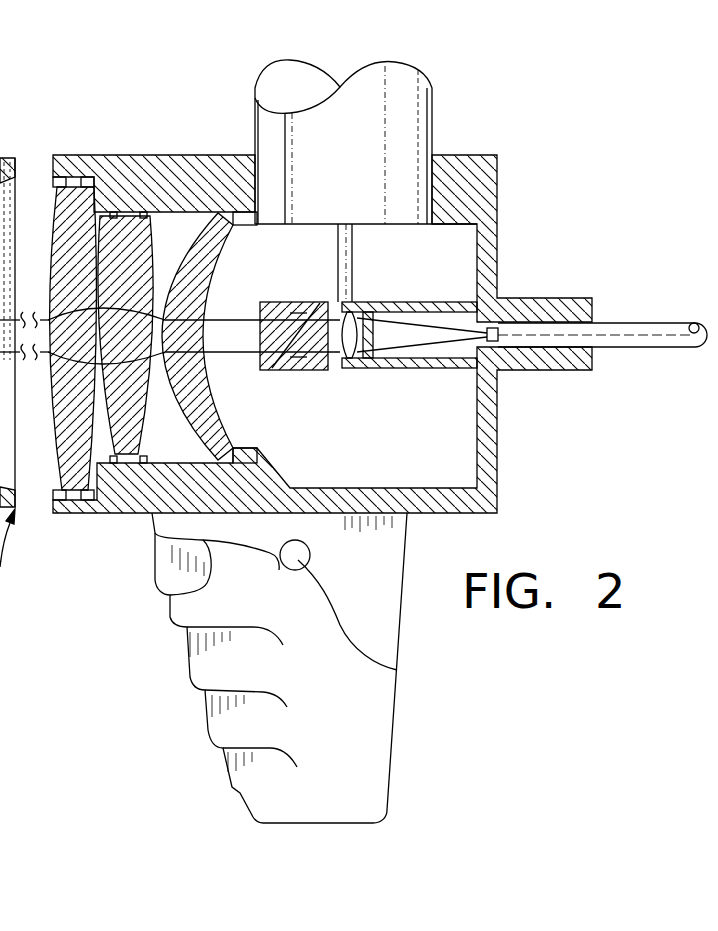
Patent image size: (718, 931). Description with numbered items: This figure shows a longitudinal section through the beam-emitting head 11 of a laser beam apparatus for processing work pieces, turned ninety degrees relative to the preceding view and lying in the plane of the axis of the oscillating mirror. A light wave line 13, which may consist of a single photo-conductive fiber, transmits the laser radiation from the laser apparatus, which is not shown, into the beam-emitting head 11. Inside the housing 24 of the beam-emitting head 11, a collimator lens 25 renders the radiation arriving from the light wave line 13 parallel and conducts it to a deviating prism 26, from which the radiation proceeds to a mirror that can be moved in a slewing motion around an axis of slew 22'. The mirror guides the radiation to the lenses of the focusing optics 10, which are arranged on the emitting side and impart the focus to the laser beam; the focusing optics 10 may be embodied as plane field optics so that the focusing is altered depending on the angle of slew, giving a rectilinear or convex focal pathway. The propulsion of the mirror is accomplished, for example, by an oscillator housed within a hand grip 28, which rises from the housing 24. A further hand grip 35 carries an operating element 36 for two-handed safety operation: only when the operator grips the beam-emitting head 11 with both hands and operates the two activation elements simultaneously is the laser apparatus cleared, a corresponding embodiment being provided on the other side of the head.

The focusing optics 10 is at (178, 240).
The beam-emitting head 11 is at (510, 243).
The light wave line 13 is at (610, 322).
The axis of slew 22' is at (451, 263).
The housing 24 is at (460, 152).
The collimator lens 25 is at (350, 360).
The deviating prism 26 is at (285, 368).
The hand grip 28 is at (358, 181).
The hand grip 35 is at (330, 810).
The operating element 36 is at (400, 670).